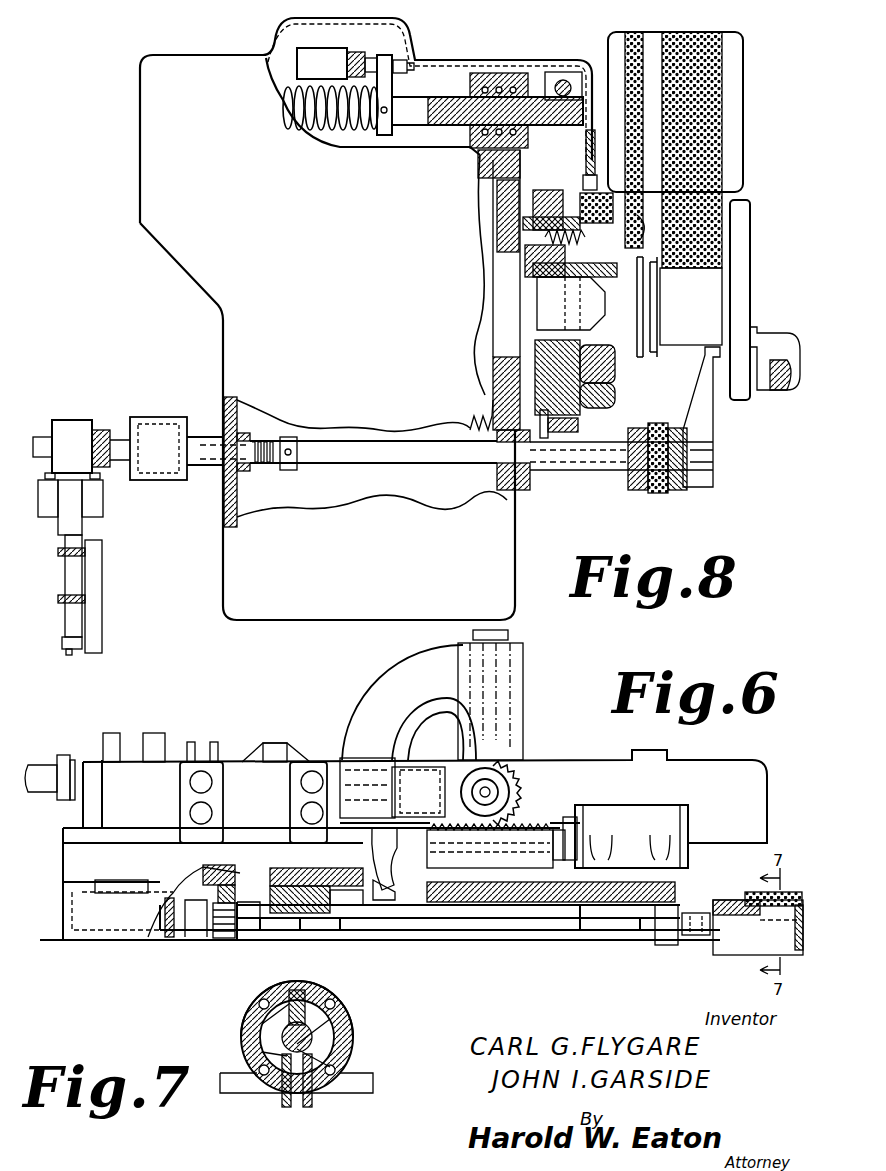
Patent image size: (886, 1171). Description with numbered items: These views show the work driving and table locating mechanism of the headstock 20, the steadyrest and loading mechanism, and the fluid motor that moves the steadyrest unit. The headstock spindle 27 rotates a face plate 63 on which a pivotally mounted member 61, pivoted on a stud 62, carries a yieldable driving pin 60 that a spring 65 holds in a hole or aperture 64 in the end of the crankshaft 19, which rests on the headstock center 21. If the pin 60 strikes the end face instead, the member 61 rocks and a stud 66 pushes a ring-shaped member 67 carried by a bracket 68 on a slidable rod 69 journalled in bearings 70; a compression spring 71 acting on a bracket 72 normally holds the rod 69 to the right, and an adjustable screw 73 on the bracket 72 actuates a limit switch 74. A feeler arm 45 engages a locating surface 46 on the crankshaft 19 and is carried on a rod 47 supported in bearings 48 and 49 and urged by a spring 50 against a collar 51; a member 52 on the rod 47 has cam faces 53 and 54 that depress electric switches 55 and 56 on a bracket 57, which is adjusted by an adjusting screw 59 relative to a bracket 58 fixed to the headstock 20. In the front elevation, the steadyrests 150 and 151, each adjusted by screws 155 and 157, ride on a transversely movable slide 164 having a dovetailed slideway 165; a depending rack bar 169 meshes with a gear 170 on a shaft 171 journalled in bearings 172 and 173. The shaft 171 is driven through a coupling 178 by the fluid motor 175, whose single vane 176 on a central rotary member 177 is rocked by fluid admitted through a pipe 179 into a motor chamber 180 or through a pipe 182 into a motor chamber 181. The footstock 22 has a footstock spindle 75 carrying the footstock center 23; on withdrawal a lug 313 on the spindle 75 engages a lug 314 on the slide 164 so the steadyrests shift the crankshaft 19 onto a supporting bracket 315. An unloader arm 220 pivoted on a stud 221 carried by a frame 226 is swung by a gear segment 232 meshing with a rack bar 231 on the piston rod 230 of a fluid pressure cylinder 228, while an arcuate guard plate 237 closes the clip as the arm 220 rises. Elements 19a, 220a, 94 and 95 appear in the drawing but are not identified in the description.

In FIG. 8, the work piece 19 is at (757, 271).
In FIG. 6, the work piece 19 is at (159, 723).
In FIG. 6, the tab 19a is at (510, 634).
In FIG. 8, the headstock 20 is at (140, 192).
In FIG. 8, the headstock center 21 is at (607, 318).
In FIG. 6, the headstock center 21 is at (57, 772).
In FIG. 6, the footstock 22 is at (487, 767).
In FIG. 6, the footstock center 23 is at (385, 770).
In FIG. 8, the headstock spindle 27 is at (492, 272).
In FIG. 8, the work engaging feeler arm 45 is at (712, 415).
In FIG. 8, the locating surface 46 is at (722, 292).
In FIG. 8, the slidably mounted rod 47 is at (441, 463).
In FIG. 8, the bearing 48 is at (224, 492).
In FIG. 8, the bearing 49 is at (535, 476).
In FIG. 8, the spring 50 is at (266, 465).
In FIG. 8, the collar 51 is at (297, 463).
In FIG. 8, the member 52 is at (76, 411).
In FIG. 8, the cam face 53 is at (52, 422).
In FIG. 8, the cam face 54 is at (98, 425).
In FIG. 8, the electric switch 55 is at (45, 517).
In FIG. 8, the electric switch 56 is at (100, 510).
In FIG. 8, the bracket 57 is at (65, 578).
In FIG. 8, the bracket 58 is at (102, 627).
In FIG. 8, the adjusting screw 59 is at (64, 650).
In FIG. 8, the driving pin 60 is at (595, 250).
In FIG. 8, the pivotally mounted member 61 is at (618, 382).
In FIG. 8, the stud 62 is at (615, 405).
In FIG. 8, the face plate 63 is at (493, 374).
In FIG. 8, the aperture 64 is at (623, 216).
In FIG. 8, the spring 65 is at (497, 220).
In FIG. 8, the stud 66 is at (599, 160).
In FIG. 8, the ring-shaped member 67 is at (578, 432).
In FIG. 8, the bracket 68 is at (569, 78).
In FIG. 8, the longitudinally slidable rod 69 is at (540, 97).
In FIG. 8, the bearing 70 is at (492, 87).
In FIG. 8, the compression spring 71 is at (328, 130).
In FIG. 8, the bracket 72 is at (386, 135).
In FIG. 8, the screw 73 is at (408, 67).
In FIG. 8, the limit switch 74 is at (318, 53).
In FIG. 6, the footstock spindle 75 is at (412, 750).
In FIG. 8, the abrasive wheel 94 is at (633, 35).
In FIG. 8, the grinding wheel 95 is at (688, 35).
In FIG. 6, the steadyrest 150 is at (216, 762).
In FIG. 6, the steadyrest 151 is at (312, 762).
In FIG. 6, the screw 155 is at (190, 782).
In FIG. 6, the adjusting screw 157 is at (190, 813).
In FIG. 6, the transversely movable slide 164 is at (65, 864).
In FIG. 6, the dovetailed slideway 165 is at (165, 895).
In FIG. 6, the rack bar 169 is at (200, 880).
In FIG. 6, the gear 170 is at (225, 940).
In FIG. 6, the rotatable shaft 171 is at (312, 915).
In FIG. 6, the bearing 172 is at (200, 912).
In FIG. 6, the bearing 173 is at (668, 947).
In FIG. 6, the fluid motor 175 is at (761, 887).
In FIG. 7, the fluid motor 175 is at (233, 1038).
In FIG. 7, the vane 176 is at (285, 990).
In FIG. 7, the central rotary member 177 is at (312, 1037).
In FIG. 6, the coupling 178 is at (697, 938).
In FIG. 7, the pipe 179 is at (309, 1102).
In FIG. 7, the motor chamber 180 is at (325, 1056).
In FIG. 7, the motor chamber 181 is at (268, 1050).
In FIG. 7, the pipe 182 is at (283, 1102).
In FIG. 6, the unloader arm 220 is at (348, 758).
In FIG. 6, the arm 220a is at (523, 688).
In FIG. 6, the stud 221 is at (505, 780).
In FIG. 6, the frame 226 is at (430, 890).
In FIG. 6, the fluid pressure cylinder 228 is at (640, 812).
In FIG. 6, the piston rod 230 is at (570, 817).
In FIG. 6, the rack bar 231 is at (538, 832).
In FIG. 6, the gear segment 232 is at (529, 793).
In FIG. 6, the guard plate 237 is at (398, 678).
In FIG. 6, the lug 313 is at (401, 859).
In FIG. 6, the lug 314 is at (401, 882).
In FIG. 6, the supporting bracket 315 is at (68, 800).